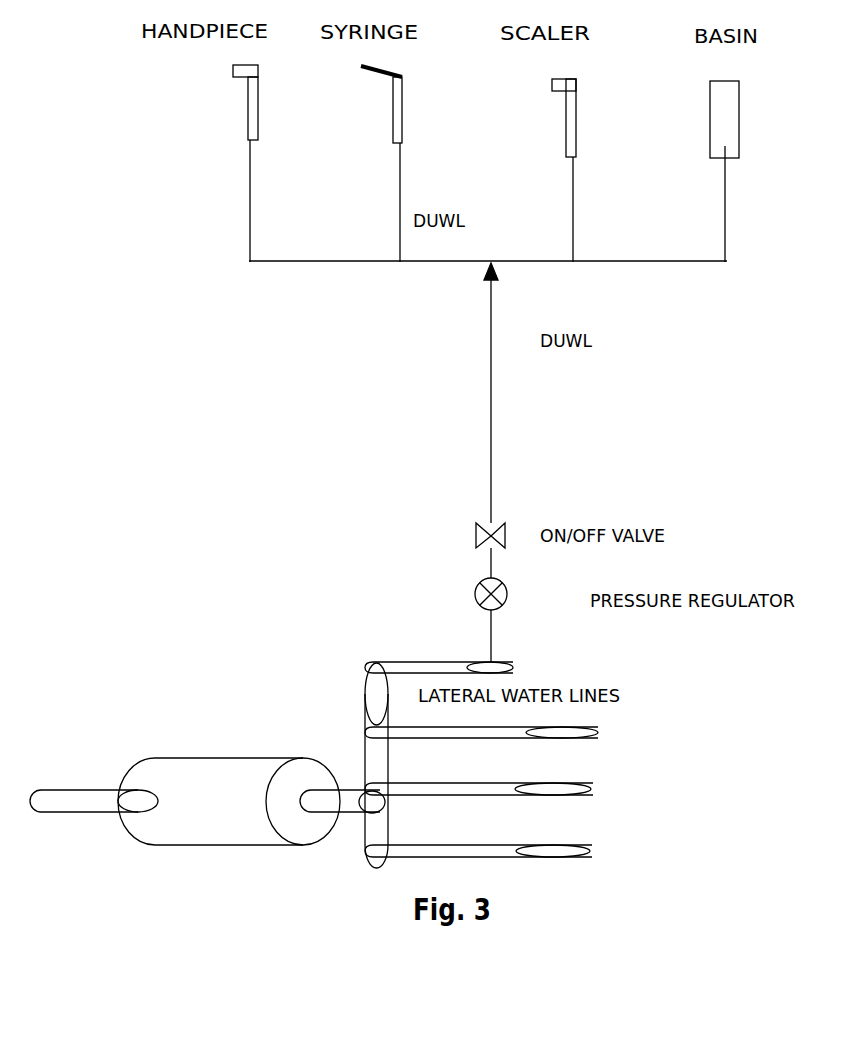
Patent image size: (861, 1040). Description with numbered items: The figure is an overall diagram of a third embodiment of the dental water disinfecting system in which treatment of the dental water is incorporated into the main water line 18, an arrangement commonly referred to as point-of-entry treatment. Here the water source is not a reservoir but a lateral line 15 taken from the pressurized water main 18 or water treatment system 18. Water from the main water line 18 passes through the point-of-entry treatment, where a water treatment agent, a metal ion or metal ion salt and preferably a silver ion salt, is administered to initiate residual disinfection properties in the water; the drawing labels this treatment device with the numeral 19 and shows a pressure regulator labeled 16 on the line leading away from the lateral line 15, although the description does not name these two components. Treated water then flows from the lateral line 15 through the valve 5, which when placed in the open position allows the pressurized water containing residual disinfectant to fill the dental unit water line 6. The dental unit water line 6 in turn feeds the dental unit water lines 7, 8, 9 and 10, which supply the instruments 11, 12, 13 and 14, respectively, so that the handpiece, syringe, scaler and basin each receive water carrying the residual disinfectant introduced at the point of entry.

The valve 5 is at (503, 535).
The dental unit water line 6 is at (488, 461).
The dental unit water line 7 is at (233, 201).
The dental unit water line 8 is at (382, 202).
The dental unit water line 9 is at (551, 209).
The dental unit water line 10 is at (700, 204).
The instrument 11 is at (237, 102).
The instrument 12 is at (380, 104).
The instrument 13 is at (545, 118).
The instrument 14 is at (700, 119).
The lateral line 15 is at (442, 833).
The pressure regulator 16 is at (526, 594).
The main water line 18 is at (99, 788).
The POE flow-through silver ion generator / silver ion sustained release source 19 is at (249, 767).